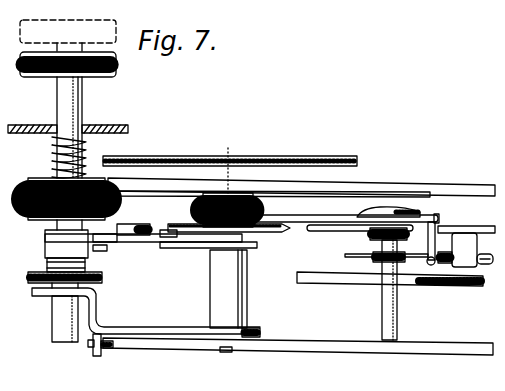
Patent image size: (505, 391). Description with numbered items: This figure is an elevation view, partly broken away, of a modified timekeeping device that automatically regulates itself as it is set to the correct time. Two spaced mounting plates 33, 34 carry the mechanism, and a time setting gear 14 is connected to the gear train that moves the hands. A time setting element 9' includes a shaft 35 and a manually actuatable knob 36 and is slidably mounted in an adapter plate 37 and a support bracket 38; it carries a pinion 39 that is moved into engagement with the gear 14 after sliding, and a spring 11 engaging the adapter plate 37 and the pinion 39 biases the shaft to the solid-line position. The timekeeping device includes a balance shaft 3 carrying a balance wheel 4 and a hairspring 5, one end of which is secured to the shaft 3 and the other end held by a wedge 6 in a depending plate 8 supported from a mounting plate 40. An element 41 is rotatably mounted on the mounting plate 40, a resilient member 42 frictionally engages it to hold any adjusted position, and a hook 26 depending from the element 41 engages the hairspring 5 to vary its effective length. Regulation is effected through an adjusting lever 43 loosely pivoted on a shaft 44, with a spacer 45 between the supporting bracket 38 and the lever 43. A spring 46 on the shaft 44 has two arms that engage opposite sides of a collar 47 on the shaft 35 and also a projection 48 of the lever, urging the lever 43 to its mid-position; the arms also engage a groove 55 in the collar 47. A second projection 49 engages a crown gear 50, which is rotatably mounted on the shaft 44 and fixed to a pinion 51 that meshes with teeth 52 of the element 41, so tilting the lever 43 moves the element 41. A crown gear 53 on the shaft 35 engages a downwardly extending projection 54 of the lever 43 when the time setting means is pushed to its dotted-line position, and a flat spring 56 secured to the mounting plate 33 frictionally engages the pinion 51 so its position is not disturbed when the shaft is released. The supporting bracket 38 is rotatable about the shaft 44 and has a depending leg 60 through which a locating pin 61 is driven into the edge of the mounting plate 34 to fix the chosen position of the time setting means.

The manually actuatable knob 36 is at (117, 68).
The shaft 35 is at (57, 98).
The time setting element 9' is at (93, 127).
The adapter plate 37 is at (128, 128).
The spring 11 is at (52, 148).
The time setting gear 14 is at (313, 157).
The mounting plate 33 is at (441, 184).
The flat spring 56 is at (152, 193).
The pinion 39 is at (30, 205).
The collar 47 is at (47, 242).
The groove 55 is at (47, 263).
The crown gear 53 is at (29, 278).
The support bracket 38 is at (104, 305).
The depending leg 60 is at (100, 362).
The locating pin 61 is at (113, 345).
The mounting plate 34 is at (455, 341).
The adjusting lever 43 is at (190, 243).
The spring 46 is at (103, 233).
The projection 48 is at (138, 225).
The downwardly extending projection 54 is at (106, 251).
The second projection 49 is at (167, 230).
The pinion 51 is at (203, 201).
The crown gear 50 is at (192, 221).
The teeth 52 is at (252, 220).
The element 41 is at (302, 215).
The spacer 45 is at (247, 290).
The shaft 44 is at (226, 353).
The resilient member 42 is at (422, 213).
The hook 26 is at (436, 240).
The mounting plate 40 is at (480, 227).
The depending plate 8 is at (477, 245).
The wedge 6 is at (490, 265).
The hairspring 5 is at (345, 256).
The balance wheel 4 is at (330, 283).
The balance shaft 3 is at (384, 308).